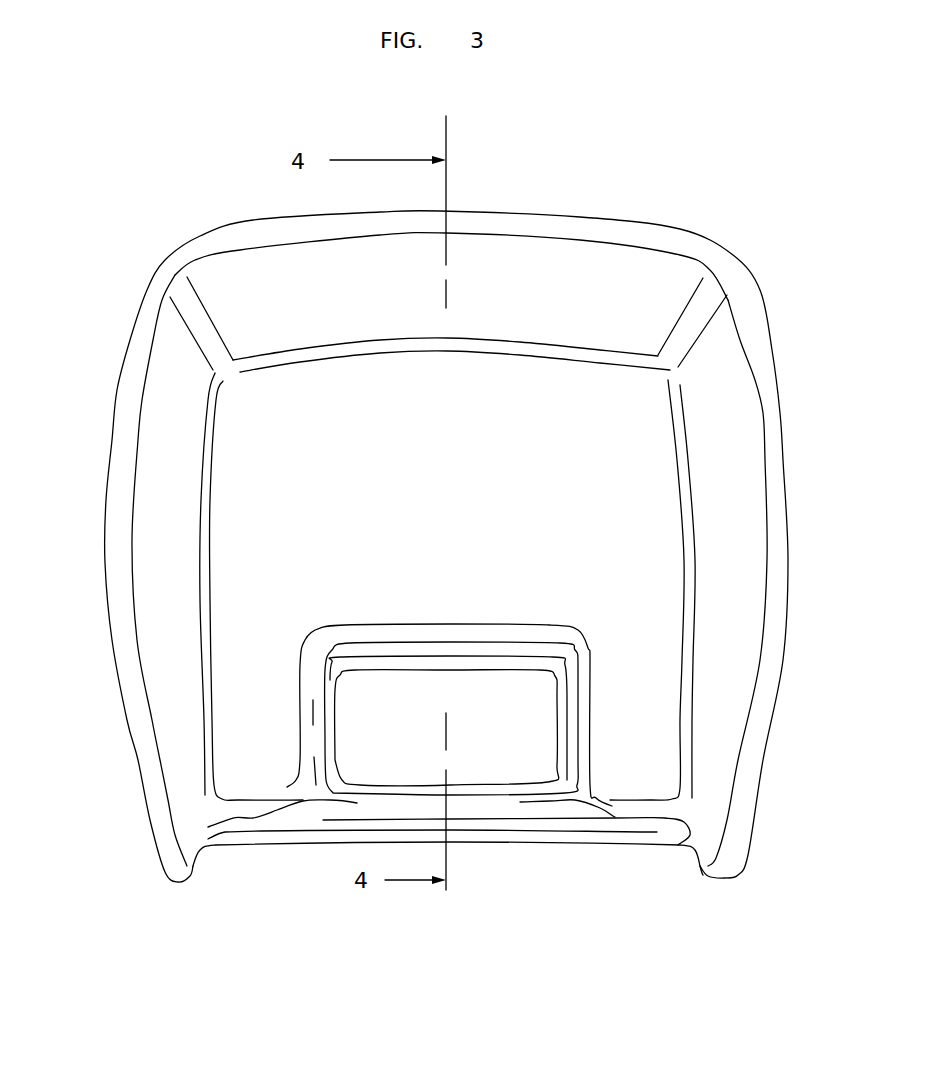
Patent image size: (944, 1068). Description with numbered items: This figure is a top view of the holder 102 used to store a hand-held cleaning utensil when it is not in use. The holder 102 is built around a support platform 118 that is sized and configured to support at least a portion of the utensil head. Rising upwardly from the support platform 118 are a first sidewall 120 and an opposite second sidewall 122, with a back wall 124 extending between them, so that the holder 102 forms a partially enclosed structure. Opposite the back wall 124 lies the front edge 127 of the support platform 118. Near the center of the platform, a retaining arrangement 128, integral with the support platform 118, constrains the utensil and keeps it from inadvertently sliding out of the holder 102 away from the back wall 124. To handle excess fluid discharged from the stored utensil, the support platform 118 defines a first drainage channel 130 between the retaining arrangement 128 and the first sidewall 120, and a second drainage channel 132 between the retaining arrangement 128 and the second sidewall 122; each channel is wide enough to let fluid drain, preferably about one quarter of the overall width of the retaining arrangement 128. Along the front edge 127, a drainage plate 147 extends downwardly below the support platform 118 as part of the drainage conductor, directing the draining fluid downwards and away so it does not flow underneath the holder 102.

The holder 102 is at (160, 207).
The support platform 118 is at (585, 450).
The first sidewall 120 is at (150, 565).
The second sidewall 122 is at (745, 525).
The back wall 124 is at (557, 267).
The front edge 127 is at (500, 815).
The retaining arrangement 128 is at (575, 637).
The first drainage channel 130 is at (265, 772).
The second drainage channel 132 is at (640, 777).
The drainage plate 147 is at (563, 833).